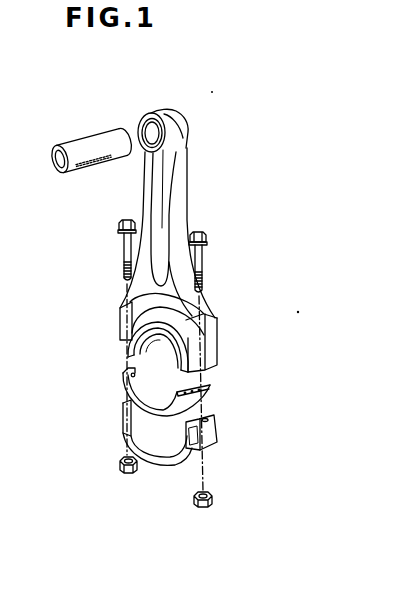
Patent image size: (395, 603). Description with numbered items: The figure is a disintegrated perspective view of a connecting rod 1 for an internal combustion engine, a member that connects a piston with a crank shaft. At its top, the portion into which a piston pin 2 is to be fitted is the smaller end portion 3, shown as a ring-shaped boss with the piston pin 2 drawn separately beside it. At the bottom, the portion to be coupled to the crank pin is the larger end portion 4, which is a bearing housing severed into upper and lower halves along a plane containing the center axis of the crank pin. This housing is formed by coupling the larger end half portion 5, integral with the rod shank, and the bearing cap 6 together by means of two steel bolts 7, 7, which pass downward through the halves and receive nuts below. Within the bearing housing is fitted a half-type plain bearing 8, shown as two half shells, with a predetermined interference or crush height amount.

The connecting rod 1 is at (270, 183).
The piston pin 2 is at (60, 172).
The smaller end portion 3 is at (190, 129).
The larger end portion 4 is at (252, 327).
The larger end half portion 5 is at (120, 324).
The bearing cap 6 is at (122, 422).
The steel bolts 7 is at (118, 227).
The half-type plain bearing 8 is at (125, 353).